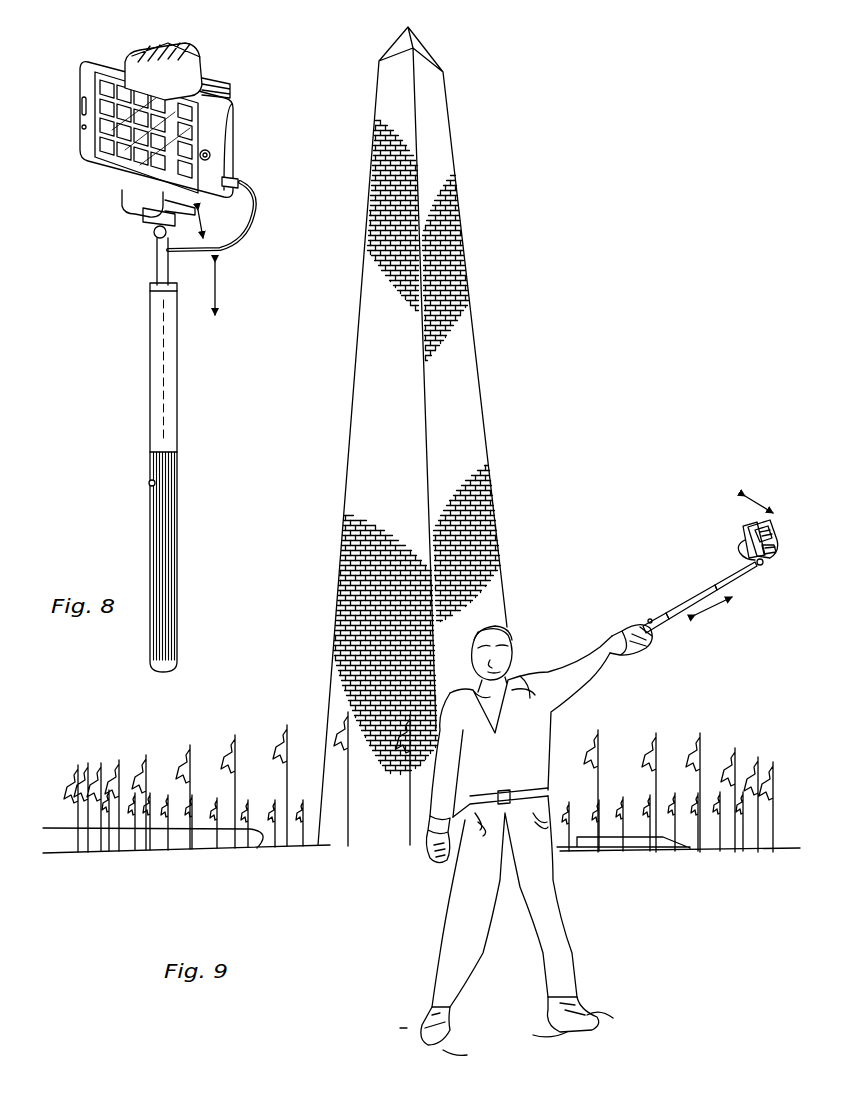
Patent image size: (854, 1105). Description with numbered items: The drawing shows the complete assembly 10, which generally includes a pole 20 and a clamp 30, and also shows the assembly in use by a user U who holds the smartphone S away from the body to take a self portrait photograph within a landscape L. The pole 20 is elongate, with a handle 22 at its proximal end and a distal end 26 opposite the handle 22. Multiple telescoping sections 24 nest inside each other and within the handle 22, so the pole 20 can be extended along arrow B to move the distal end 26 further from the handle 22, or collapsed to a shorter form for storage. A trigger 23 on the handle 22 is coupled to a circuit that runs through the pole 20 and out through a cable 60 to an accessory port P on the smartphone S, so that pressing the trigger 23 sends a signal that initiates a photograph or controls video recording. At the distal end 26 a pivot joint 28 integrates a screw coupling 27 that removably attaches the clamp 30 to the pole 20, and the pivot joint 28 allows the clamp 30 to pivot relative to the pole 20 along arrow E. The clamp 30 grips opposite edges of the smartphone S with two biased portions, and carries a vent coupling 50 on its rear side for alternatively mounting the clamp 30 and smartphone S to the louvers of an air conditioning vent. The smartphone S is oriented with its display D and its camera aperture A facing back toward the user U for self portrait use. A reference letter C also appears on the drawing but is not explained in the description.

In FIG. 8, the assembly 10 is at (205, 432).
In FIG. 9, the assembly 10 is at (747, 604).
In FIG. 8, the pole 20 is at (155, 276).
In FIG. 9, the pole 20 is at (678, 598).
In FIG. 8, the handle 22 is at (177, 612).
In FIG. 9, the handle 22 is at (662, 640).
In FIG. 8, the trigger 23 is at (152, 483).
In FIG. 9, the trigger 23 is at (645, 618).
In FIG. 8, the telescoping sections 24 is at (157, 252).
In FIG. 9, the telescoping sections 24 is at (707, 583).
In FIG. 8, the distal end 26 is at (145, 216).
In FIG. 8, the screw coupling 27 is at (130, 192).
In FIG. 8, the pivot joint 28 is at (153, 231).
In FIG. 9, the pivot joint 28 is at (767, 563).
In FIG. 8, the clamp 30 is at (90, 210).
In FIG. 9, the clamp 30 is at (768, 574).
In FIG. 8, the vent coupling 50 is at (228, 86).
In FIG. 9, the vent coupling 50 is at (772, 533).
In FIG. 8, the cable 60 is at (230, 243).
In FIG. 9, the cable 60 is at (742, 553).
In FIG. 8, the aperture A is at (80, 128).
In FIG. 8, the arrow B is at (220, 288).
In FIG. 9, the arrow B is at (715, 612).
In FIG. 8, the button press direction C is at (143, 490).
In FIG. 9, the button press direction C is at (643, 622).
In FIG. 8, the display D is at (107, 70).
In FIG. 8, the arrow E is at (210, 222).
In FIG. 9, the arrow E is at (762, 490).
In FIG. 8, the accessory port P is at (230, 165).
In FIG. 9, the accessory port P is at (742, 542).
In FIG. 8, the smartphone S is at (227, 140).
In FIG. 9, the smartphone S is at (743, 530).
In FIG. 9, the landscape L is at (387, 511).
In FIG. 9, the user U is at (527, 766).